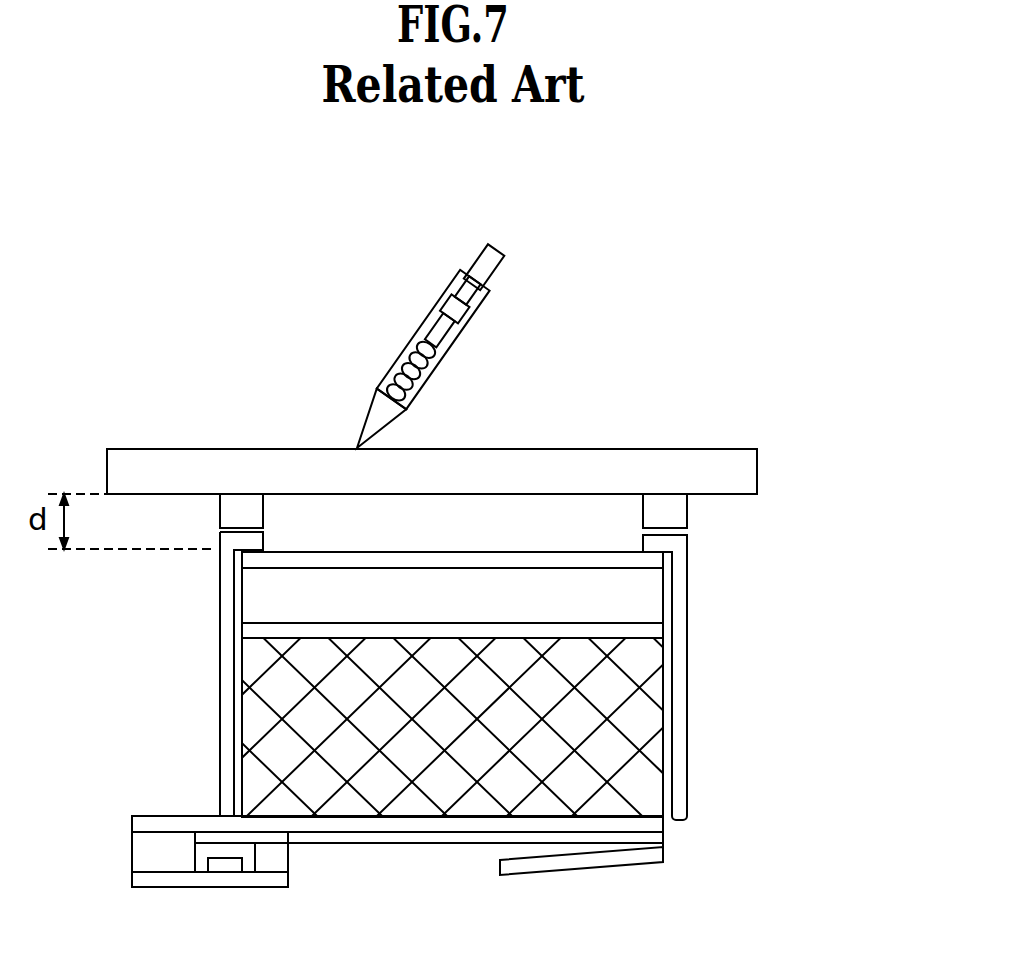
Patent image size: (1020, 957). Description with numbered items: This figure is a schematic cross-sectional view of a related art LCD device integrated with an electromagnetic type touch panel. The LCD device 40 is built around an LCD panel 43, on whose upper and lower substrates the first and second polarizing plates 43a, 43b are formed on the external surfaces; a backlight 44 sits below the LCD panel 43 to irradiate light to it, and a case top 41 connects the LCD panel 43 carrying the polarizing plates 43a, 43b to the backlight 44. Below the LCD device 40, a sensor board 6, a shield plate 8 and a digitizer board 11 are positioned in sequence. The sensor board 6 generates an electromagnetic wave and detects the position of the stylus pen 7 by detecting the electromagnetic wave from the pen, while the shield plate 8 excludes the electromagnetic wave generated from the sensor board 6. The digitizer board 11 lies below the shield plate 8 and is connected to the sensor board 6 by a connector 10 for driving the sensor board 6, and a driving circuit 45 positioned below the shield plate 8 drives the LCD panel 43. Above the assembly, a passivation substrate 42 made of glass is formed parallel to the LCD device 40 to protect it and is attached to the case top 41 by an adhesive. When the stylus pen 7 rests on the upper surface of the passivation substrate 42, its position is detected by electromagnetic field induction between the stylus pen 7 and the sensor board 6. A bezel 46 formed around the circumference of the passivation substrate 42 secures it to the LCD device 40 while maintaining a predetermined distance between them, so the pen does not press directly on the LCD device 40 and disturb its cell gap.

The stylus pen 7 is at (480, 285).
The passivation substrate 42 is at (755, 474).
The bezel 46 is at (682, 508).
The case top 41 is at (228, 652).
The LCD device 40 is at (465, 656).
The LCD panel 43 is at (650, 597).
The second polarizing plate 43b is at (650, 563).
The first polarizing plate 43a is at (650, 633).
The backlight 44 is at (795, 562).
The sensor board 6 is at (158, 818).
The shield plate 8 is at (658, 840).
The connector 10 is at (140, 852).
The digitizer board 11 is at (177, 880).
The driving circuit 45 is at (612, 862).